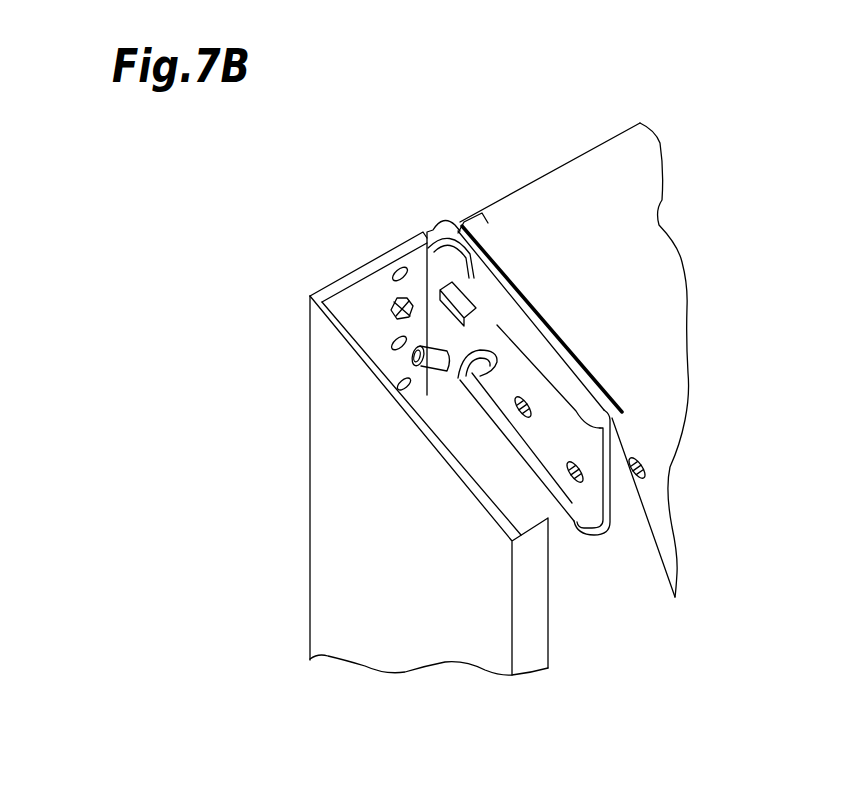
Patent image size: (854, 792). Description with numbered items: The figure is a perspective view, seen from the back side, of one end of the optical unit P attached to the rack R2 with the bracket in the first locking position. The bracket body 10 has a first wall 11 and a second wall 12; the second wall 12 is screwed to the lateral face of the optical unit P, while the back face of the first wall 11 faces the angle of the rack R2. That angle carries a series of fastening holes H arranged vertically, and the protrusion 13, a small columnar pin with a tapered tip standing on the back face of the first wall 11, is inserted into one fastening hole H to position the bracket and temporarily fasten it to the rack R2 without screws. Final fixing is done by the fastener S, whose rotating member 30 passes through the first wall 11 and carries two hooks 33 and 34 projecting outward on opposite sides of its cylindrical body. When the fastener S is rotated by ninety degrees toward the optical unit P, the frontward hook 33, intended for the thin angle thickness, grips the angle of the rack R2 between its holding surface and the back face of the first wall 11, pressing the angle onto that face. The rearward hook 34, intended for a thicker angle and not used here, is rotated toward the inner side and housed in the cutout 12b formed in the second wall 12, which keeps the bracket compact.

The bracket body 10 is at (577, 390).
The first wall 11 is at (443, 237).
The second wall 12 is at (573, 532).
The cutout 12b is at (457, 222).
The protrusion 13 is at (395, 309).
The rotating member 30 is at (448, 372).
The hook 33 is at (388, 250).
The hook 34 is at (500, 323).
The fastening hole H is at (391, 267).
The optical unit P is at (590, 176).
The rack R2 is at (333, 450).
The fastener S is at (495, 360).